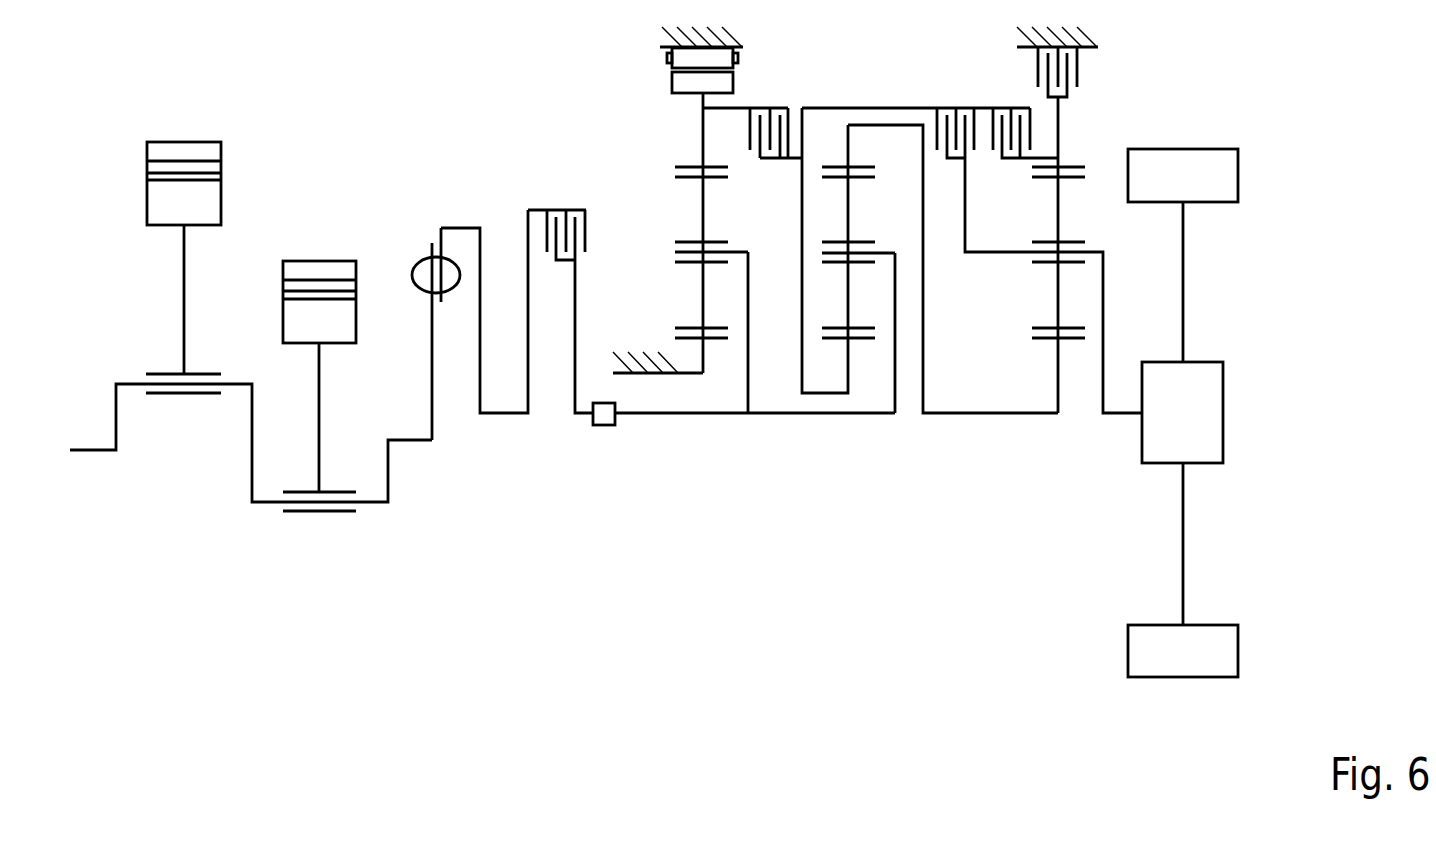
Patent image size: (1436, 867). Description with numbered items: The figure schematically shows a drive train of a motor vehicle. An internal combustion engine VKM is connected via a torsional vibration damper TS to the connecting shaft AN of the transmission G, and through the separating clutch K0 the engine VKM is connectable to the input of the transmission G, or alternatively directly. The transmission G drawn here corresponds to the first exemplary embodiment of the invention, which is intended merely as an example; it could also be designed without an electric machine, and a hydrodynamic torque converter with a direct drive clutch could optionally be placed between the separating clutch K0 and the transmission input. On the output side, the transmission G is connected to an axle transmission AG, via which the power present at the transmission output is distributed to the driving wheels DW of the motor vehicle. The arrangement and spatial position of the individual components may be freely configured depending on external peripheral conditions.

The internal combustion engine VKM is at (253, 523).
The torsional vibration damper TS is at (442, 305).
The connecting shaft AN is at (505, 413).
The separating clutch K0 is at (557, 275).
The transmission G is at (814, 523).
The axle transmission AG is at (1223, 412).
The driving wheels DW is at (1238, 172).